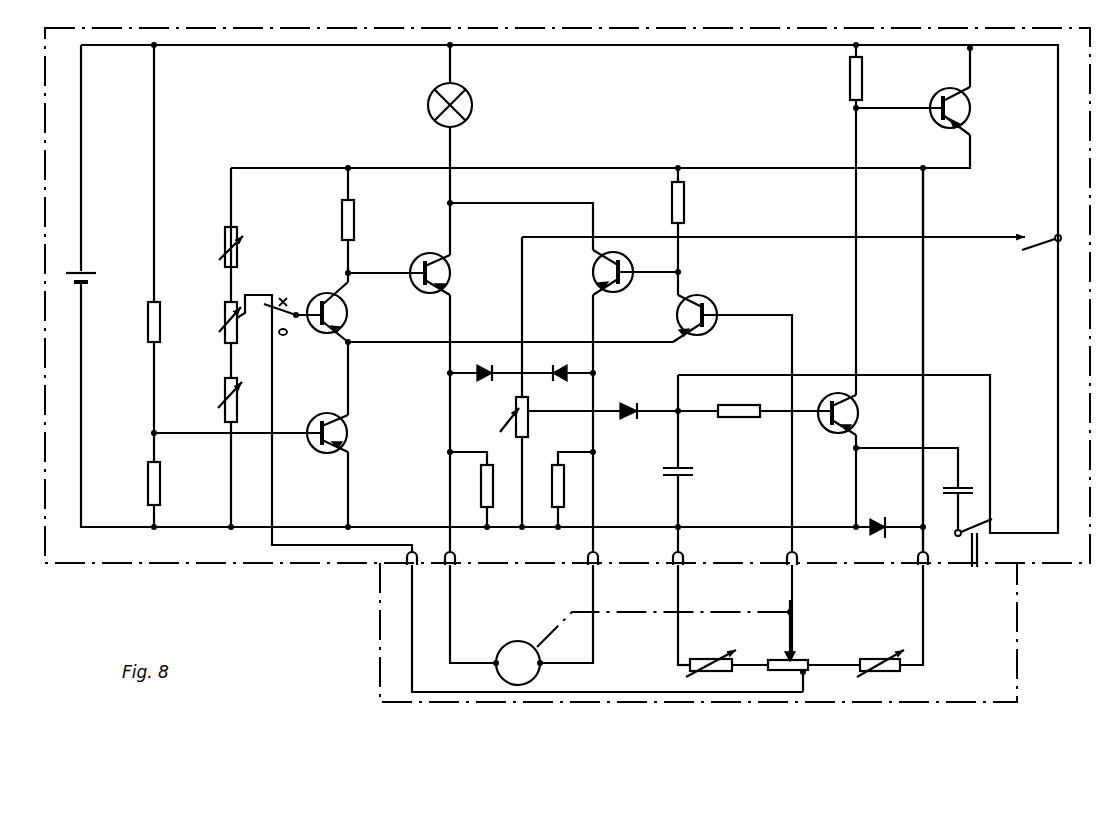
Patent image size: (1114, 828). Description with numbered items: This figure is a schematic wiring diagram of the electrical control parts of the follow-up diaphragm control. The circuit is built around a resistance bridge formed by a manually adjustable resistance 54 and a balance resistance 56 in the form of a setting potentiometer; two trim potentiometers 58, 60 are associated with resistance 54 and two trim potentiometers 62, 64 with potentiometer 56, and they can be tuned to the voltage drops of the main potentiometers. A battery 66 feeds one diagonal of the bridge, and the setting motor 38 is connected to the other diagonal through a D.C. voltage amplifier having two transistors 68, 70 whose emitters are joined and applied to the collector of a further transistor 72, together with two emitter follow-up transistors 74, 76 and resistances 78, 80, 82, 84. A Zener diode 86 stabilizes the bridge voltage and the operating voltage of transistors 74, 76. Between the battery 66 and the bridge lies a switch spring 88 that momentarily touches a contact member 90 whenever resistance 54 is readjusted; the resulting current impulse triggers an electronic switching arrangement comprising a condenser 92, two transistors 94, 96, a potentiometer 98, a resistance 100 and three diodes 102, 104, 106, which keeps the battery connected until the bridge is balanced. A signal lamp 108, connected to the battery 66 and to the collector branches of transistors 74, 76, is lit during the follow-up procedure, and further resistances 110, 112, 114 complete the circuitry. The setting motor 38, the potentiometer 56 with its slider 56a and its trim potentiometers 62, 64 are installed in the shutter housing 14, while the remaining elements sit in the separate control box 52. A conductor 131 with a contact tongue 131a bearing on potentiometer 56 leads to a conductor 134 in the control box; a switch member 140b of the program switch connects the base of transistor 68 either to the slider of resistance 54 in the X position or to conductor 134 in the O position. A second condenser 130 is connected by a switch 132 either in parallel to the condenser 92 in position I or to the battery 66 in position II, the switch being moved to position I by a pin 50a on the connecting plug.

The shutter housing 14 is at (380, 633).
The setting motor 38 is at (516, 648).
The pin 50a is at (986, 553).
The control box 52 is at (321, 564).
The manually adjustable resistance 54 is at (226, 307).
The balance resistance 56 is at (806, 662).
The slider 56a is at (790, 648).
The trim potentiometer 58 is at (226, 226).
The trim potentiometer 60 is at (223, 392).
The trim potentiometer 62 is at (707, 674).
The trim potentiometer 64 is at (880, 674).
The battery 66 is at (90, 273).
The transistor 68 is at (317, 296).
The transistor 70 is at (716, 302).
The transistor 72 is at (316, 440).
The transistor 74 is at (417, 252).
The transistor 76 is at (593, 272).
The resistance 78 is at (342, 212).
The resistance 80 is at (684, 206).
The resistance 82 is at (484, 490).
The resistance 84 is at (562, 481).
The Zener diode 86 is at (879, 516).
The switch spring 88 is at (1036, 252).
The contact member 90 is at (1033, 232).
The condenser 92 is at (691, 477).
The transistor 94 is at (831, 430).
The transistor 96 is at (972, 110).
The potentiometer 98 is at (517, 405).
The resistance 100 is at (740, 418).
The diode 102 is at (484, 365).
The diode 104 is at (566, 365).
The diode 106 is at (635, 401).
The signal lamp 108 is at (471, 103).
The resistance 110 is at (146, 482).
The resistance 112 is at (146, 328).
The resistance 114 is at (848, 80).
The second condenser 130 is at (961, 487).
The conductor 131 is at (631, 700).
The contact tongue 131a is at (805, 688).
The switch 132 is at (980, 518).
The conductor 134 is at (275, 386).
The switch member 140b is at (264, 306).